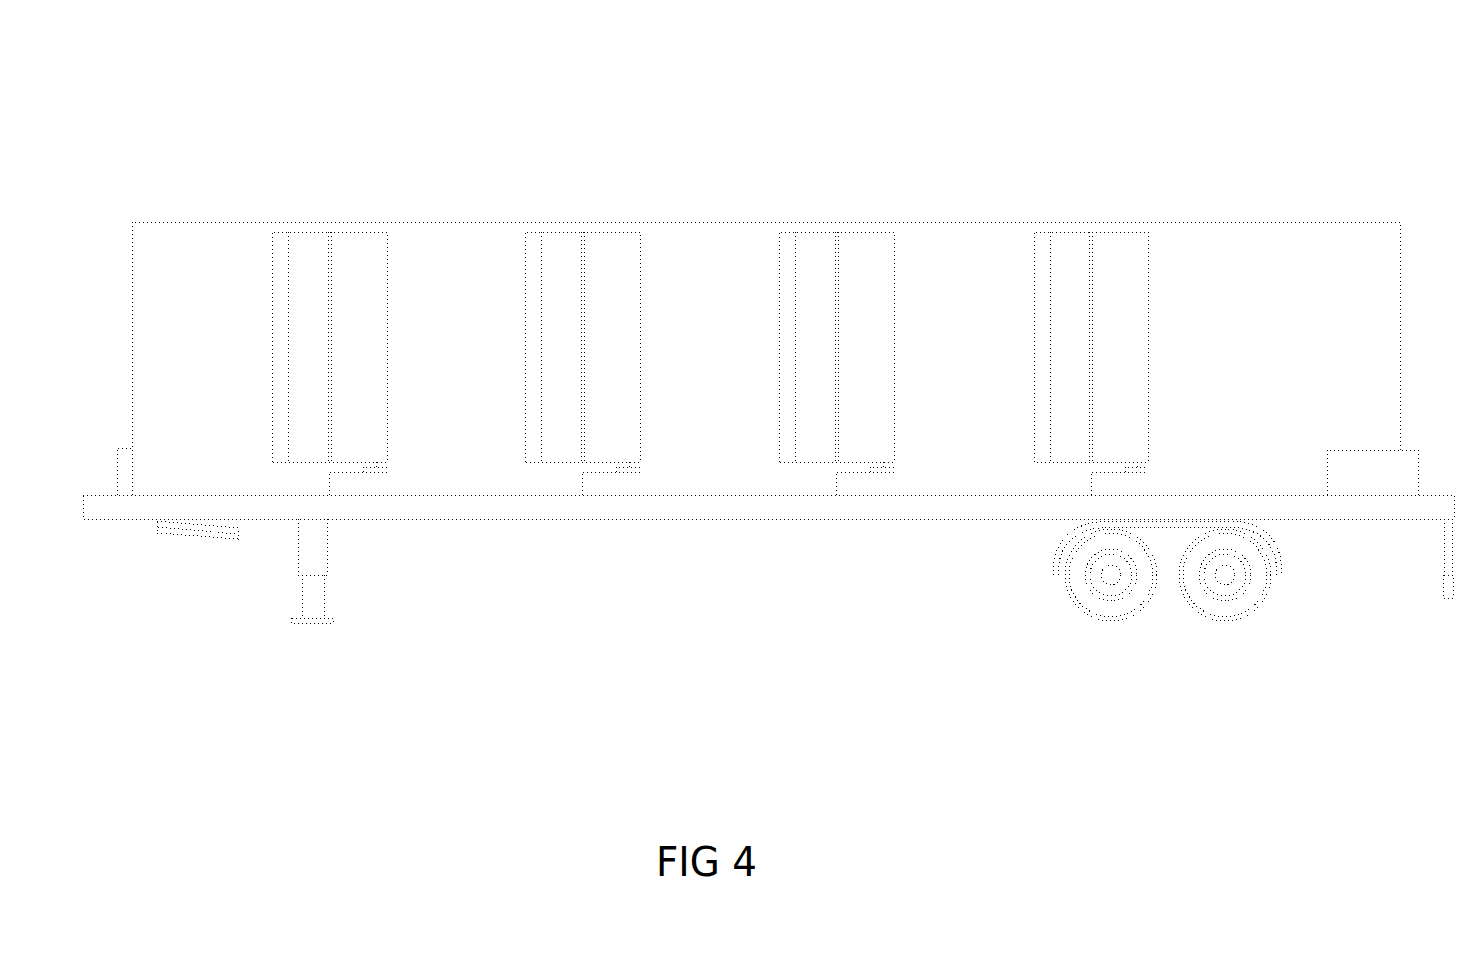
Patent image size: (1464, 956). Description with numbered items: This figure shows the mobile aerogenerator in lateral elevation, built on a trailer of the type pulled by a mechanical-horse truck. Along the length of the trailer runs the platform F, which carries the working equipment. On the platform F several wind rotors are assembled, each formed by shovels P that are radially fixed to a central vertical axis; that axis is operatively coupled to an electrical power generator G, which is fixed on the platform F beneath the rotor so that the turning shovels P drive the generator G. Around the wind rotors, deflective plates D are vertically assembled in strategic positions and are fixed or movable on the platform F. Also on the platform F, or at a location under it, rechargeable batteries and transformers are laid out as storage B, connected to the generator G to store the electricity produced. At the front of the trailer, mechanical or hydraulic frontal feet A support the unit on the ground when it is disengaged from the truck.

The platform F is at (213, 495).
The shovels P is at (813, 255).
The deflective plates D is at (950, 275).
The storage B is at (1366, 468).
The electrical power generator G is at (840, 484).
The frontal feet A is at (319, 564).